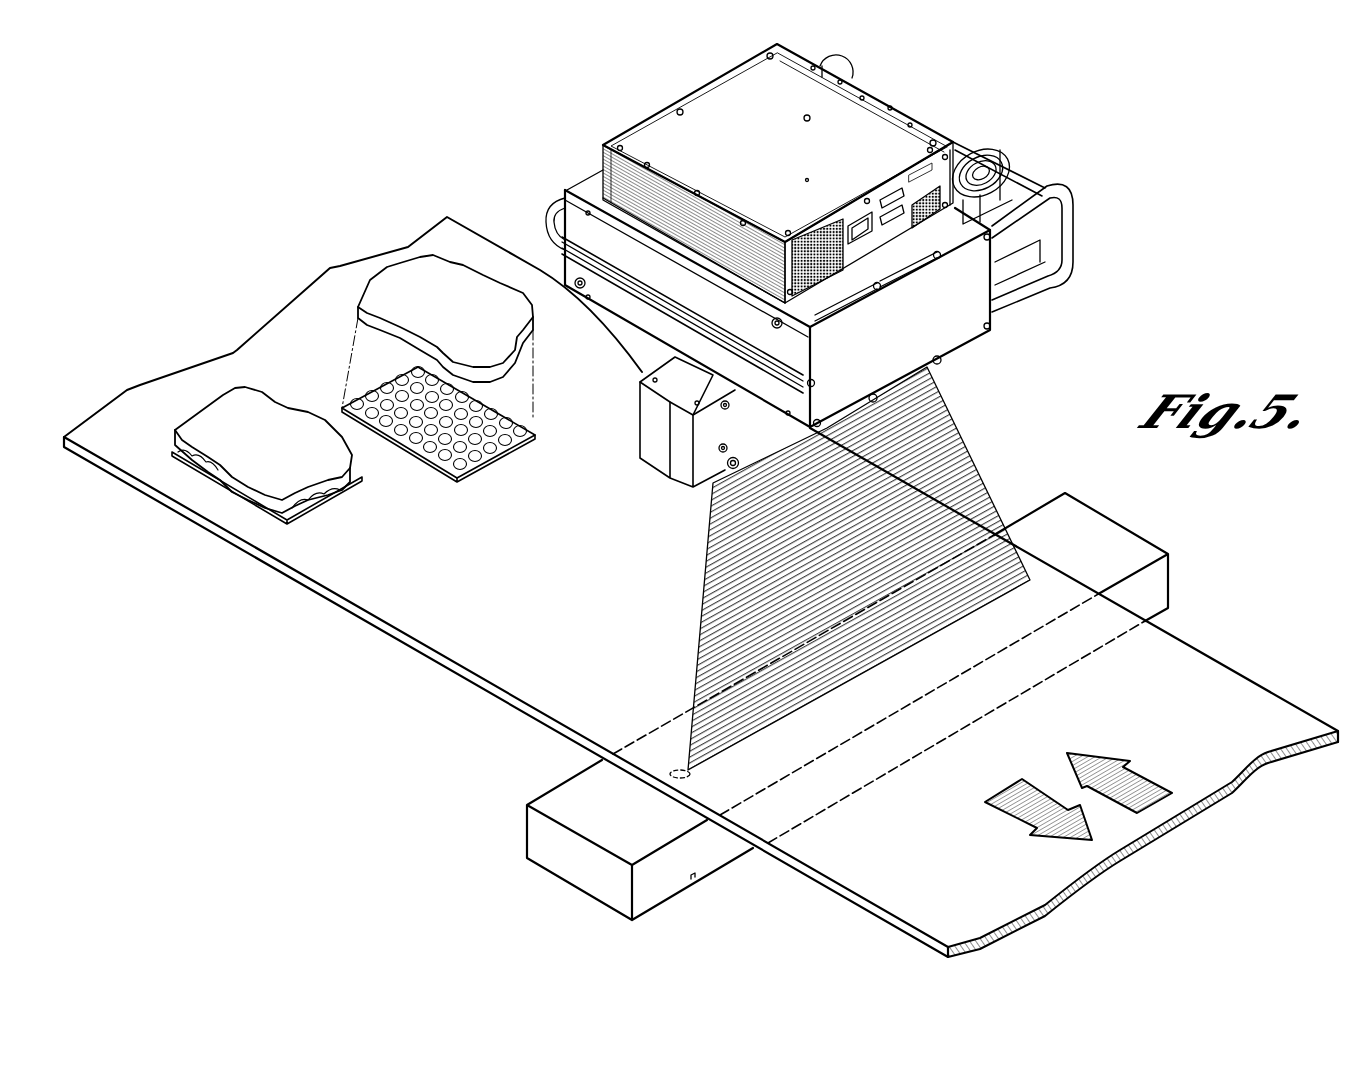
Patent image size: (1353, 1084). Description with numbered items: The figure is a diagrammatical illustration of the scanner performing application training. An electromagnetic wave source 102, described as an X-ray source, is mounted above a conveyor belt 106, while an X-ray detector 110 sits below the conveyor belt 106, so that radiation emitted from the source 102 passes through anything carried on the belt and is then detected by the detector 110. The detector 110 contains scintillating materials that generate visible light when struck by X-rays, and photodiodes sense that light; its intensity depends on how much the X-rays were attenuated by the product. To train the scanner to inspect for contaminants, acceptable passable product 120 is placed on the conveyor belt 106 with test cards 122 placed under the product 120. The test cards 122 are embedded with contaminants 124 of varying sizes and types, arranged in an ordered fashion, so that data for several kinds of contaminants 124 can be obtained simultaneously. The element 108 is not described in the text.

The electromagnetic wave source 102 is at (950, 335).
The conveyor belt 106 is at (323, 306).
The sensor head 108 is at (667, 373).
The X-ray detector 110 is at (578, 870).
The product 120 is at (227, 415).
The test cards 122 is at (416, 468).
The contaminants 124 is at (453, 470).